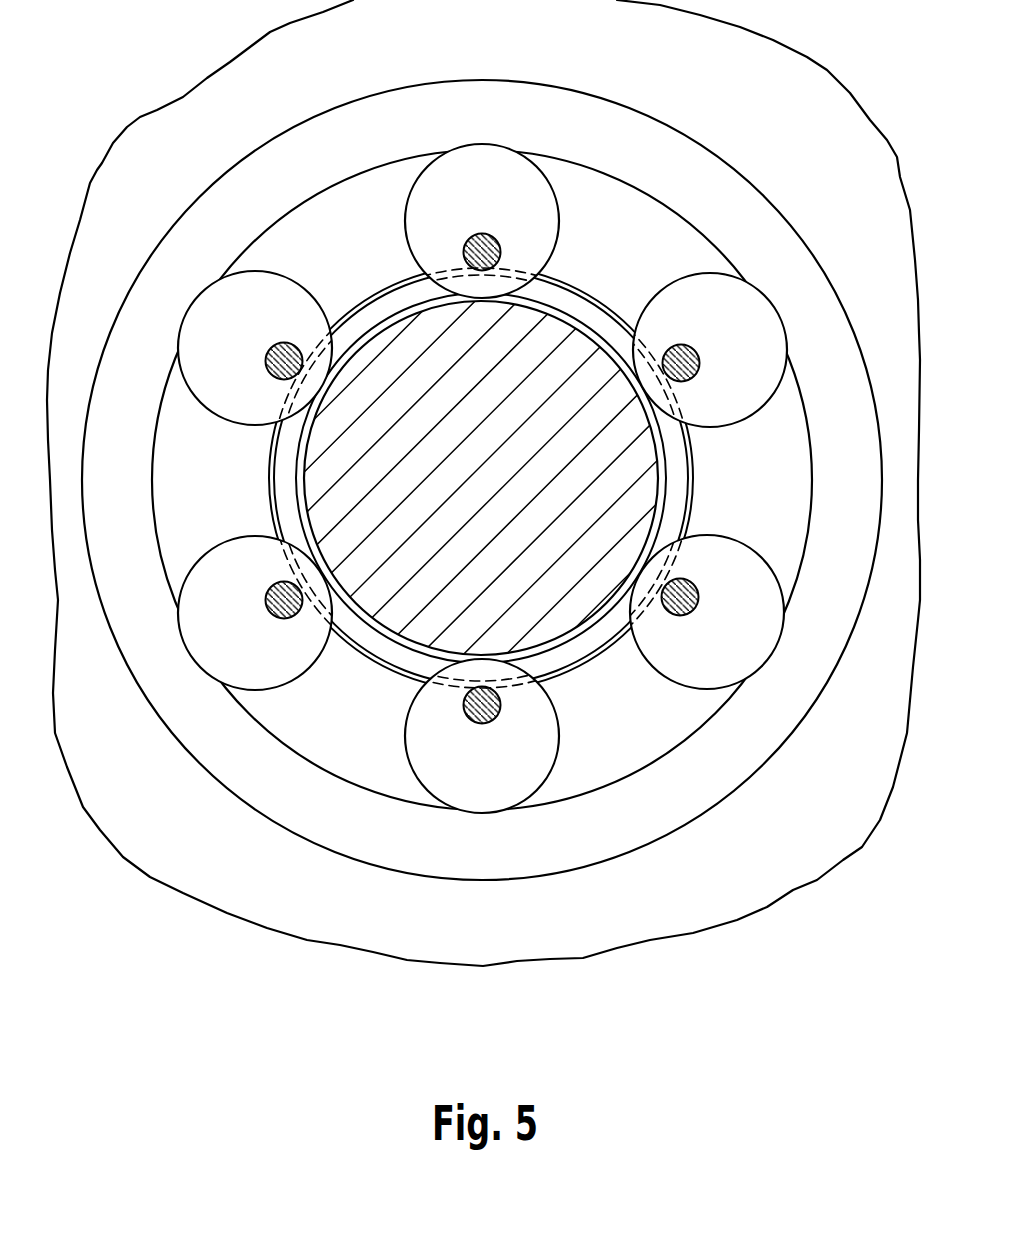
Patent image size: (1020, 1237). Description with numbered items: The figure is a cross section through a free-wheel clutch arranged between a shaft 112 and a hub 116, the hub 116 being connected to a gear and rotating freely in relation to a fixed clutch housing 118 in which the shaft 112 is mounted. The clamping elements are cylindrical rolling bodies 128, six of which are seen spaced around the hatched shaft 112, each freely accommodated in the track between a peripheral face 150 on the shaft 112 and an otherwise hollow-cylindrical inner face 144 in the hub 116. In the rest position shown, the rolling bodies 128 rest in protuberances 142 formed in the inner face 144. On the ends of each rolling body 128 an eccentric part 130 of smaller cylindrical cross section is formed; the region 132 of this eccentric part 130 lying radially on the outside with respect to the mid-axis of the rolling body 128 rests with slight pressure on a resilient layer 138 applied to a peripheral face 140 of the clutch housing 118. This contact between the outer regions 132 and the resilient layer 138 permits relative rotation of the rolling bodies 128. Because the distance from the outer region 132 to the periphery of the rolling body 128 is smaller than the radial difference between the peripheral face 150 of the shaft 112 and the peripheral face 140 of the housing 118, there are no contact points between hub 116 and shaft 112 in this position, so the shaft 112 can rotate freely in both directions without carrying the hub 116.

The shaft 112 is at (323, 500).
The hub 116 is at (735, 192).
The clutch housing 118 is at (419, 520).
The rolling bodies 128 is at (557, 229).
The eccentric parts 130 is at (466, 241).
The outer region of the eccentric part 132 is at (313, 345).
The resilient layer 138 is at (693, 452).
The peripheral face of the clutch housing 140 is at (690, 508).
The protuberances 142 is at (482, 409).
The inner face 144 is at (627, 167).
The peripheral face of the shaft 150 is at (300, 456).